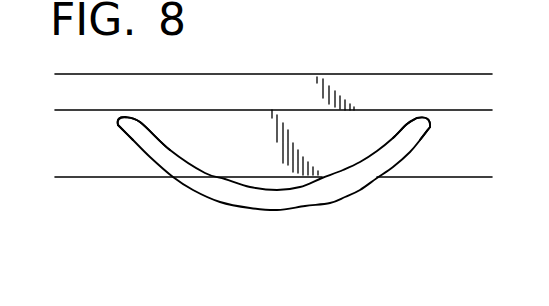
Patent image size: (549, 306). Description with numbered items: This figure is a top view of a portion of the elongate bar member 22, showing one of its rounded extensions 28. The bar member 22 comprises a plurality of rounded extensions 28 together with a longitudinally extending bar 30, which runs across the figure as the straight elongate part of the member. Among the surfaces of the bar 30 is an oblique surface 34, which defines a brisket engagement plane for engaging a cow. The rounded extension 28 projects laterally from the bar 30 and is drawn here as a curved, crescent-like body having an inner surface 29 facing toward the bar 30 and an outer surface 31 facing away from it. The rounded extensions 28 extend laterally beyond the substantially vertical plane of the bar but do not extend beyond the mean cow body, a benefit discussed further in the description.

The bar member 22 is at (294, 87).
The rounded extension 28 is at (230, 195).
The inner surface 29 is at (403, 142).
The longitudinally extending bar 30 is at (392, 85).
The outer surface 31 is at (141, 143).
The oblique surface 34 is at (95, 160).